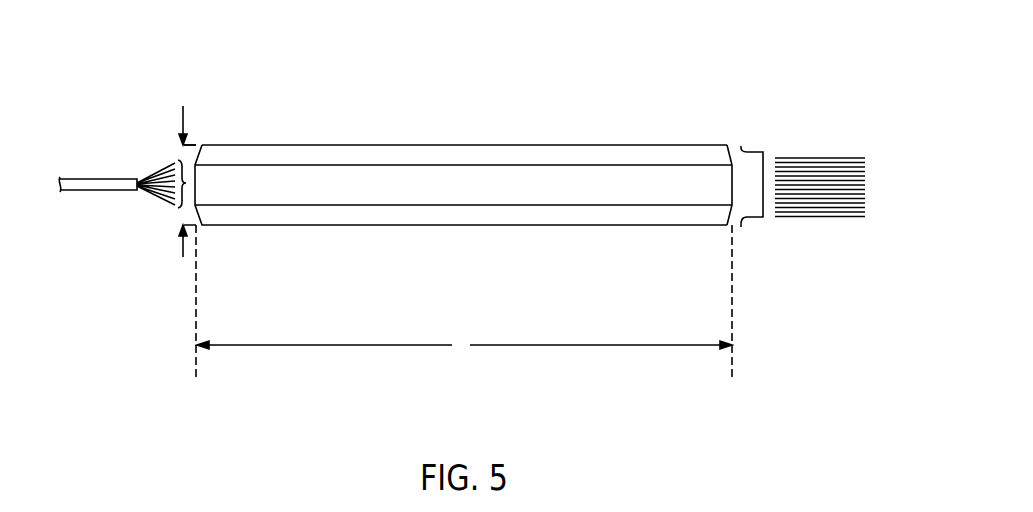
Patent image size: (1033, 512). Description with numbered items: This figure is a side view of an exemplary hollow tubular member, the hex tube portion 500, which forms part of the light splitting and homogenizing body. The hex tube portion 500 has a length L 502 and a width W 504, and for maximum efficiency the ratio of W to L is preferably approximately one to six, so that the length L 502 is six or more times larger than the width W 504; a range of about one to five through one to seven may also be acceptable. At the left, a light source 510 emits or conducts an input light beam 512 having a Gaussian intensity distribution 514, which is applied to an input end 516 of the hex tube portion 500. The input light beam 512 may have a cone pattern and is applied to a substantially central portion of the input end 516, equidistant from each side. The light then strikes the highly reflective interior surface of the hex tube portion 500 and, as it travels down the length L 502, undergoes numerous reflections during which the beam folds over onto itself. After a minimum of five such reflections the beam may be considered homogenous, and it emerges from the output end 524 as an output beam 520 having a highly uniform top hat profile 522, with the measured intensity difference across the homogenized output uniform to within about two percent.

The hex tube portion 500 is at (450, 131).
The length L 502 is at (572, 348).
The width W 504 is at (183, 250).
The light source 510 is at (82, 178).
The input light beam 512 is at (140, 198).
The Gaussian intensity distribution 514 is at (173, 208).
The input end 516 is at (177, 153).
The output beam 520 is at (842, 156).
The top hat profile 522 is at (747, 229).
The output end 524 is at (735, 147).